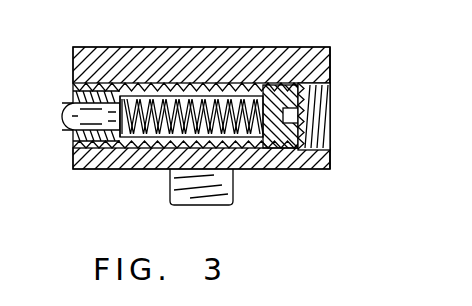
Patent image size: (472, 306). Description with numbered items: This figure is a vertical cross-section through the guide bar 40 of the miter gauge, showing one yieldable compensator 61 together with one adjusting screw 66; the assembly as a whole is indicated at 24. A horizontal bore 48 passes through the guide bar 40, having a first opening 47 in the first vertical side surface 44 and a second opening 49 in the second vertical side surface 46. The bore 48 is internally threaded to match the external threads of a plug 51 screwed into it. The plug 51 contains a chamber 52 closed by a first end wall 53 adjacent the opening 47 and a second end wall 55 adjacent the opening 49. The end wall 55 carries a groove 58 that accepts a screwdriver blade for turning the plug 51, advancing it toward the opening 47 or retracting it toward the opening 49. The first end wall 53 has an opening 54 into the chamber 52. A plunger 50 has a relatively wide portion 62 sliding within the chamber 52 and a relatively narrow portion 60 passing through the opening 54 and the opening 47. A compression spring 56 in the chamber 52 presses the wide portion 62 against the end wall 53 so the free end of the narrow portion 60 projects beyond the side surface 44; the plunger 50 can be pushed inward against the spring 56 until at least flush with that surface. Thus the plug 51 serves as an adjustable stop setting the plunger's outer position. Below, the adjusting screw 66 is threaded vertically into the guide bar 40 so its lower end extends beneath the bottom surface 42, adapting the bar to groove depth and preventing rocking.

The clamping assembly 24 is at (217, 118).
The guide bar 40 is at (128, 55).
The bottom surface 42 is at (320, 169).
The first vertical side surface 44 is at (72, 158).
The second vertical side surface 46 is at (318, 164).
The first opening 47 is at (72, 88).
The horizontal bore 48 is at (84, 88).
The second opening 49 is at (320, 82).
The plunger 50 is at (64, 101).
The plug 51 is at (276, 88).
The chamber 52 is at (210, 97).
The first end wall 53 is at (115, 137).
The opening 54 is at (107, 140).
The second end wall 55 is at (305, 129).
The compression spring 56 is at (172, 97).
The groove 58 is at (300, 113).
The relatively narrow portion 60 is at (66, 122).
The yieldable compensator 61 is at (217, 118).
The relatively wide portion 62 is at (130, 135).
The adjusting screw 66 is at (233, 197).